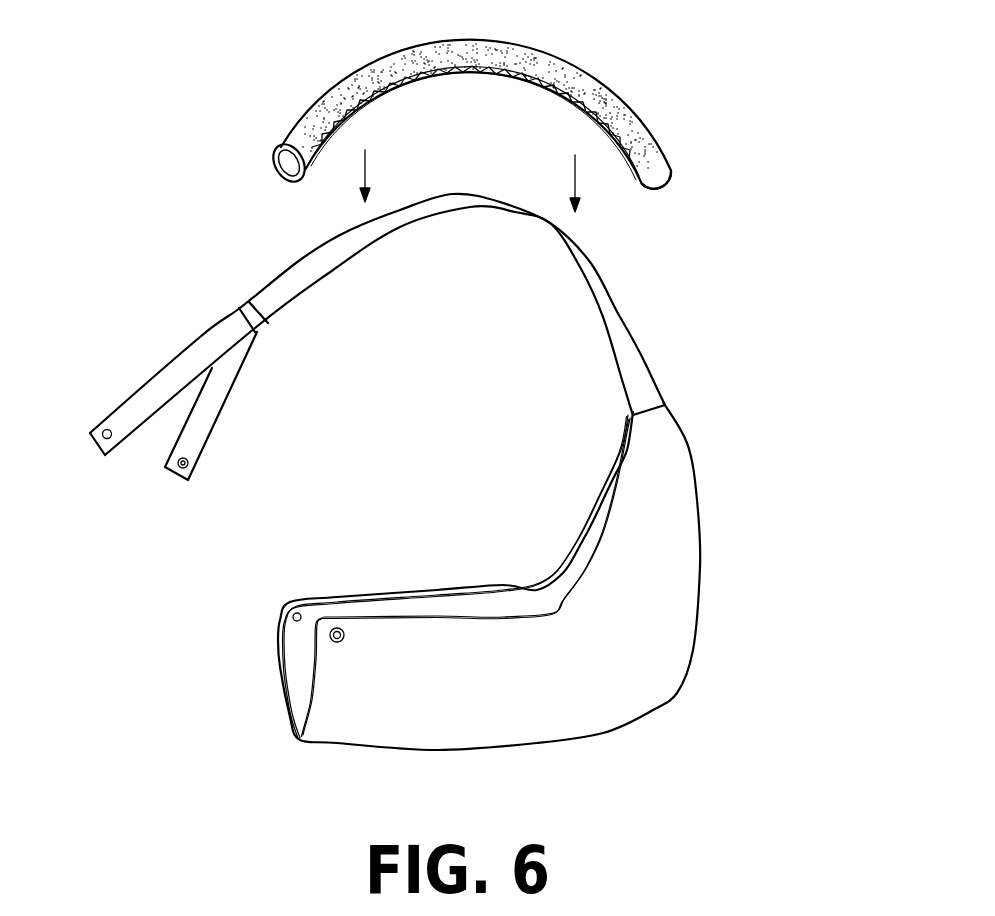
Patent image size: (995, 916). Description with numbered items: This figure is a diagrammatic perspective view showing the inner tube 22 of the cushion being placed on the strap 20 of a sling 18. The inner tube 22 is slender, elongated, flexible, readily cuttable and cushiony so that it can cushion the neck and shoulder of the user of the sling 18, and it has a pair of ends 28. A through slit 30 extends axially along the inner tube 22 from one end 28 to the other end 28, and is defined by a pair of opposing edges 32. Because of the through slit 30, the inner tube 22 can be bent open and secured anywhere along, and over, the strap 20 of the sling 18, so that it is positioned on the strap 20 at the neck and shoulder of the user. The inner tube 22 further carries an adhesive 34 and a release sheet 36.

The sling 18 is at (582, 513).
The strap 20 is at (603, 349).
The inner tube 22 is at (366, 50).
The ends 28 is at (265, 163).
The through slit 30 is at (337, 168).
The opposing edges 32 is at (471, 113).
The adhesive 34 is at (474, 121).
The release sheet 36 is at (463, 87).